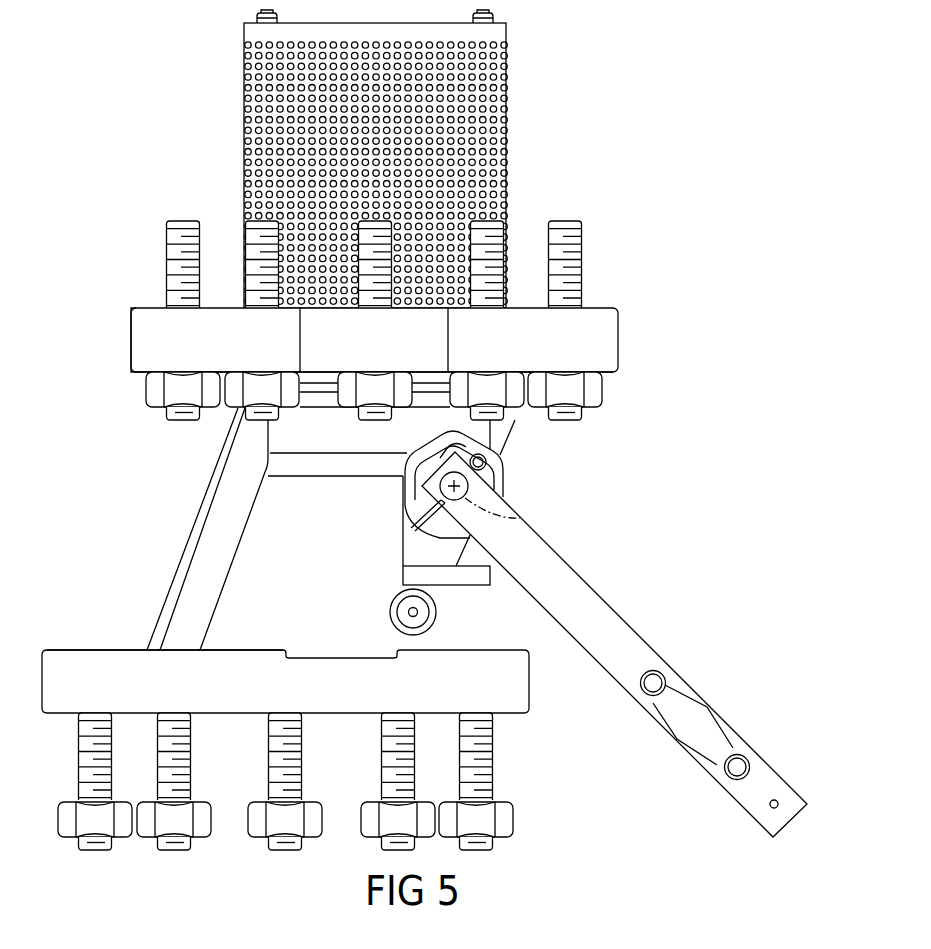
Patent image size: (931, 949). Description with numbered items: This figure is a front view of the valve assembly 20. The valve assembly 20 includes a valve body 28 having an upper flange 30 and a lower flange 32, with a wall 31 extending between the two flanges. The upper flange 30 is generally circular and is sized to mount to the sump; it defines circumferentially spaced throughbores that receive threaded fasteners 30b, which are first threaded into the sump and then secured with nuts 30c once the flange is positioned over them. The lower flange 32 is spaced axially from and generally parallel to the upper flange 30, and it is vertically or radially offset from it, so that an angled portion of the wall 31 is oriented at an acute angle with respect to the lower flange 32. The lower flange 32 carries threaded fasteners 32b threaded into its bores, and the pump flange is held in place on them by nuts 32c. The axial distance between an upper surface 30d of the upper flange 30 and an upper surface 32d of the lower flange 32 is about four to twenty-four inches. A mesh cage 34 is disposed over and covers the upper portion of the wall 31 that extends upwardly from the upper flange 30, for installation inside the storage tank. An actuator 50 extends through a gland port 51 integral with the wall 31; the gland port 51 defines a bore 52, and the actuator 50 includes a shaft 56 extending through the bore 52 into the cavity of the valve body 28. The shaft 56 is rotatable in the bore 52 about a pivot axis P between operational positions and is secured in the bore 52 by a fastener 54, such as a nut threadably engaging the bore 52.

The valve assembly 20 is at (541, 63).
The valve body 28 is at (131, 340).
The upper flange 30 is at (608, 340).
The threaded fasteners 30b is at (171, 274).
The nuts 30c is at (150, 391).
The upper surface of the upper flange 30d is at (140, 376).
The wall 31 is at (255, 618).
The lower flange 32 is at (122, 668).
The threaded fasteners 32b is at (83, 770).
The nuts 32c is at (124, 828).
The upper surface of the lower flange 32d is at (78, 650).
The mesh cage 34 is at (478, 133).
The actuator 50 is at (527, 505).
The gland port 51 is at (466, 447).
The bore 52 is at (450, 532).
The fastener 54 is at (410, 483).
The shaft 56 is at (490, 468).
The pivot axis P is at (528, 520).